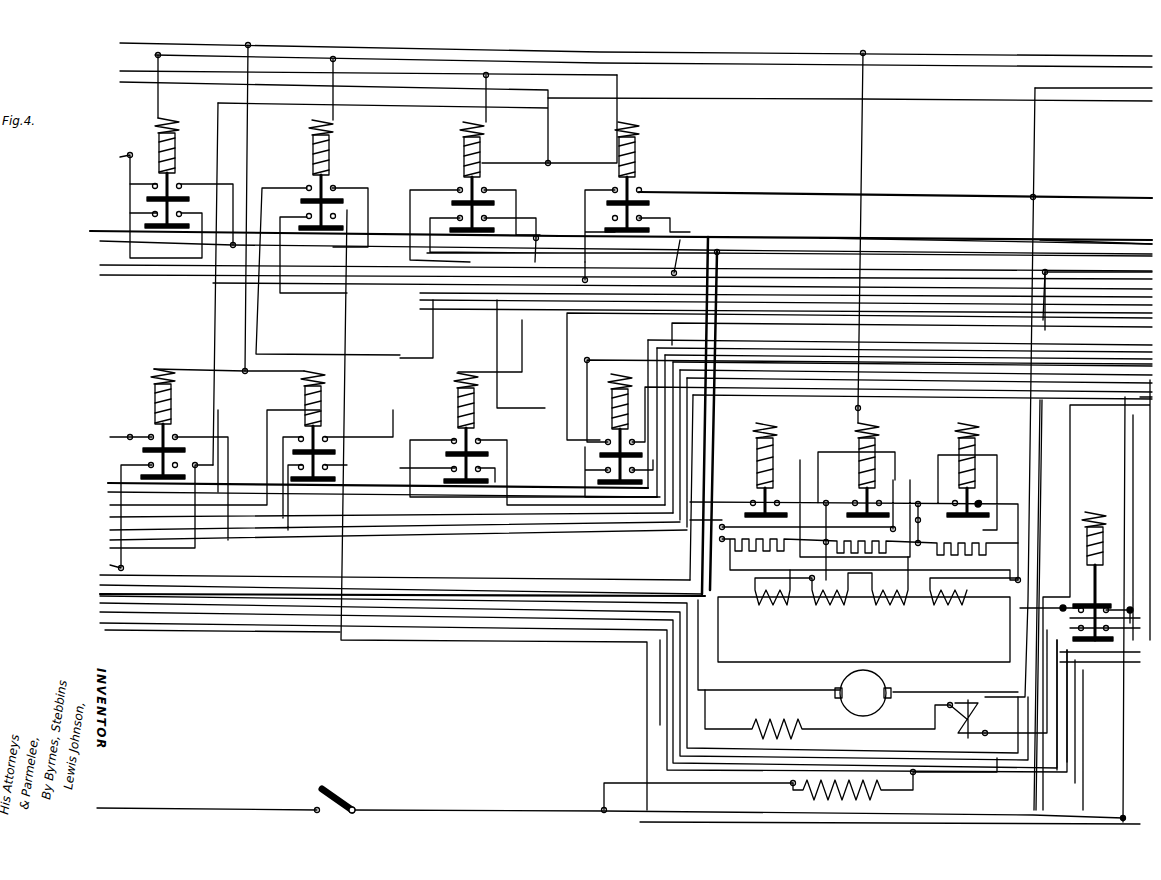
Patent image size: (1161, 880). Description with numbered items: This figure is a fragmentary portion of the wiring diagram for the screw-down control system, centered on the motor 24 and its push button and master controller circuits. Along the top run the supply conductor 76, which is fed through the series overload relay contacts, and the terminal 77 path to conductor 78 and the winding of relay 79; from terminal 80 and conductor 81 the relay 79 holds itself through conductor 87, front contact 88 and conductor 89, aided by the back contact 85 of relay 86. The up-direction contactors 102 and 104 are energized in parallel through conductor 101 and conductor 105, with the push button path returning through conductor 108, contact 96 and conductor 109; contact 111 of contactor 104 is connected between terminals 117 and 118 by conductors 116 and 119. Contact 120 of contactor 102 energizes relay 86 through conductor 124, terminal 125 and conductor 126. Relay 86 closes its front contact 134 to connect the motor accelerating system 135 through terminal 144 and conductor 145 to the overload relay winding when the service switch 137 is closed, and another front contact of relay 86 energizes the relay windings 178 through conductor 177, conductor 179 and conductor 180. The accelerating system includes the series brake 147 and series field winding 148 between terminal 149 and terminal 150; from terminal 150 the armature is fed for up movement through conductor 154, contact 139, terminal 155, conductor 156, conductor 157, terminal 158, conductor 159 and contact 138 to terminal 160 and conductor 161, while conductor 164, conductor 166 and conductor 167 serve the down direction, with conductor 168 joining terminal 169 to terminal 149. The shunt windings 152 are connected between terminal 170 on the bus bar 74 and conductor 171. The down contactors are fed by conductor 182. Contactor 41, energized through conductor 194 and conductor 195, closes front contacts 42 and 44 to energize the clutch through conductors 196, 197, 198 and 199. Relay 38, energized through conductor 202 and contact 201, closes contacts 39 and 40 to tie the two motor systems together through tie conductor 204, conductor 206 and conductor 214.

The motor 24 is at (891, 690).
The relay 38 is at (167, 368).
The contact 39 is at (175, 440).
The contact 40 is at (177, 470).
The contactor 41 is at (338, 387).
The front contact 42 is at (328, 437).
The front contact 44 is at (333, 466).
The bus bar 74 is at (440, 806).
The conductor 76 is at (138, 55).
The terminal 77 is at (158, 42).
The conductor 78 is at (162, 110).
The relay 79 is at (178, 137).
The terminal 80 is at (137, 148).
The conductor 81 is at (112, 154).
The back contact 85 is at (1106, 605).
The relay 86 is at (1106, 522).
The conductor 87 is at (182, 258).
The front contact 88 is at (180, 213).
The conductor 89 is at (116, 208).
The contact 96 is at (172, 192).
The conductor 101 is at (120, 72).
The contactor 102 is at (483, 135).
The contactor 104 is at (640, 140).
The conductor 105 is at (120, 84).
The conductor 108 is at (124, 178).
The conductor 109 is at (345, 262).
The contact 111 is at (648, 216).
The conductor 116 is at (958, 235).
The terminal 117 is at (676, 273).
The terminal 118 is at (568, 261).
The conductor 119 is at (118, 280).
The contact 120 is at (484, 218).
The conductor 124 is at (1120, 438).
The terminal 125 is at (540, 235).
The conductor 126 is at (829, 240).
The front contact 134 is at (1090, 574).
The motor accelerating system 135 is at (868, 609).
The service switch 137 is at (345, 795).
The contact 138 is at (485, 192).
The contact 139 is at (641, 190).
The terminal 144 is at (690, 545).
The conductor 145 is at (460, 580).
The series brake 147 is at (945, 735).
The series field winding 148 is at (771, 720).
The terminal 149 is at (1015, 577).
The terminal 150 is at (748, 235).
The shunt windings 152 is at (908, 795).
The conductor 154 is at (573, 208).
The terminal 155 is at (1032, 194).
The conductor 156 is at (1034, 130).
The conductor 157 is at (708, 415).
The terminal 158 is at (710, 238).
The conductor 159 is at (562, 192).
The terminal 160 is at (407, 222).
The conductor 161 is at (113, 218).
The conductor 164 is at (912, 246).
The conductor 166 is at (1088, 196).
The conductor 167 is at (400, 290).
The conductor 168 is at (1045, 272).
The terminal 169 is at (1051, 272).
The terminal 170 is at (600, 805).
The conductor 171 is at (270, 630).
The conductor 177 is at (866, 124).
The relay windings 178 is at (692, 423).
The conductor 179 is at (108, 608).
The conductor 180 is at (398, 185).
The conductor 182 is at (732, 97).
The conductor 194 is at (251, 132).
The conductor 195 is at (128, 500).
The conductor 196 is at (405, 128).
The conductor 197 is at (108, 530).
The conductor 198 is at (108, 543).
The conductor 199 is at (108, 519).
The contact 201 is at (305, 451).
The conductor 202 is at (109, 487).
The tie conductor 204 is at (108, 555).
The conductor 206 is at (114, 437).
The conductor 214 is at (108, 580).